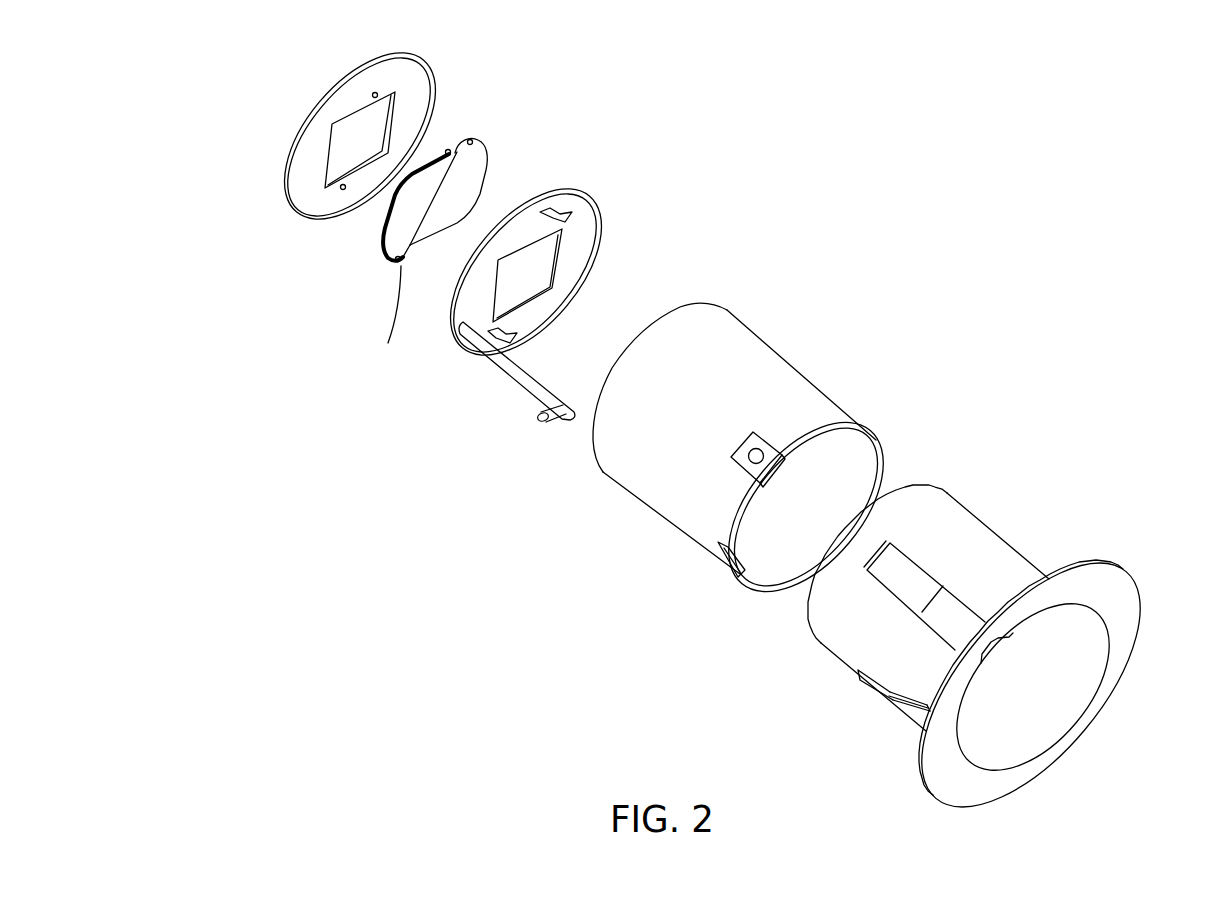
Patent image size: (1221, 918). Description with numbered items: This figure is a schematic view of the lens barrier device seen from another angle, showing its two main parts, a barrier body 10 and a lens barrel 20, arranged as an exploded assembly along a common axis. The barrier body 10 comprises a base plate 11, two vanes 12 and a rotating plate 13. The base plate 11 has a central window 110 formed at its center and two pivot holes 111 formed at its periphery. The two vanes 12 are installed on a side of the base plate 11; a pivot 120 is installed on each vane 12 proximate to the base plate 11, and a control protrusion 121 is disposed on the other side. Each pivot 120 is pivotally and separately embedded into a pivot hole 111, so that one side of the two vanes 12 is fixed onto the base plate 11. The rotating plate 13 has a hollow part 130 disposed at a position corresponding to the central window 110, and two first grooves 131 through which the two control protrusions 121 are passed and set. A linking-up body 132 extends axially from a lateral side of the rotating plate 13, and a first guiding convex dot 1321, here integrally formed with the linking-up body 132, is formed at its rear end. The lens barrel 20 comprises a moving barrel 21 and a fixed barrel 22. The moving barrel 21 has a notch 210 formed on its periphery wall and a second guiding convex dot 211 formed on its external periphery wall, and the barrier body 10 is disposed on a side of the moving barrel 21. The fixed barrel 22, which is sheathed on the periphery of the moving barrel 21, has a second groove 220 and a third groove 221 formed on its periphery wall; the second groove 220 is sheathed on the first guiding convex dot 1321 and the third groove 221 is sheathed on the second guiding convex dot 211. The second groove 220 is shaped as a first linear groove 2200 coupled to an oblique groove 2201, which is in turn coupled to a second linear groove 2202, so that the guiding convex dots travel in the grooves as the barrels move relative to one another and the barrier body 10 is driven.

The barrier body 10 is at (792, 181).
The base plate 11 is at (440, 61).
The central window 110 is at (332, 157).
The pivot holes 111 is at (342, 191).
The vanes 12 is at (503, 146).
The pivot 120 is at (447, 148).
The control protrusion 121 is at (397, 326).
The rotating plate 13 is at (600, 191).
The hollow part 130 is at (533, 268).
The first grooves 131 is at (568, 216).
The linking-up body 132 is at (522, 392).
The first guiding convex dot 1321 is at (541, 423).
The lens barrel 20 is at (1198, 487).
The moving barrel 21 is at (792, 334).
The notch 210 is at (727, 553).
The second guiding convex dot 211 is at (763, 428).
The fixed barrel 22 is at (1020, 513).
The second groove 220 is at (846, 674).
The first linear groove 2200 is at (927, 708).
The oblique groove 2201 is at (903, 696).
The second linear groove 2202 is at (863, 682).
The third groove 221 is at (917, 585).